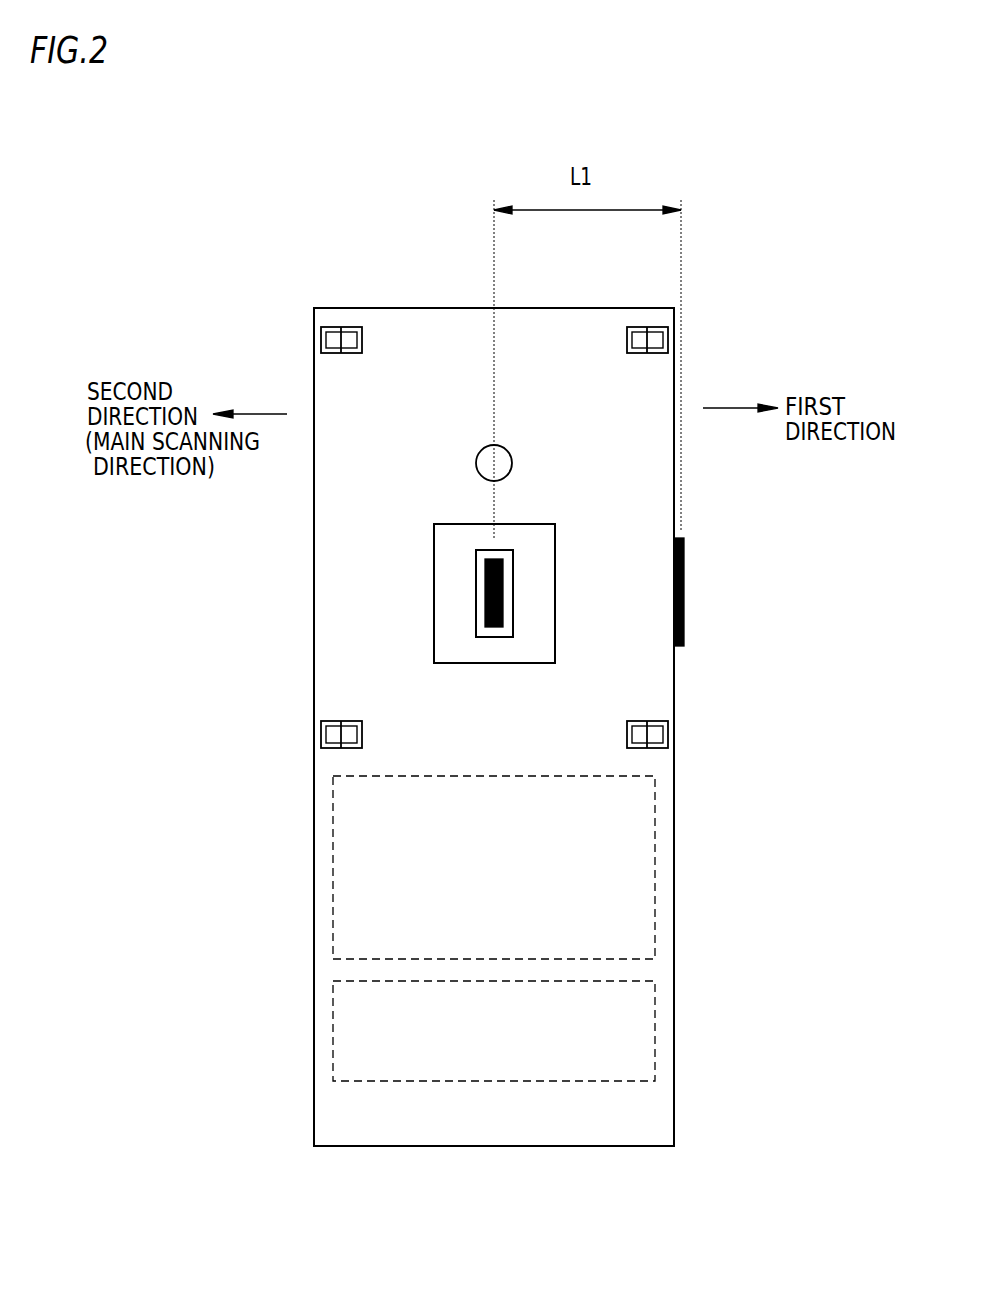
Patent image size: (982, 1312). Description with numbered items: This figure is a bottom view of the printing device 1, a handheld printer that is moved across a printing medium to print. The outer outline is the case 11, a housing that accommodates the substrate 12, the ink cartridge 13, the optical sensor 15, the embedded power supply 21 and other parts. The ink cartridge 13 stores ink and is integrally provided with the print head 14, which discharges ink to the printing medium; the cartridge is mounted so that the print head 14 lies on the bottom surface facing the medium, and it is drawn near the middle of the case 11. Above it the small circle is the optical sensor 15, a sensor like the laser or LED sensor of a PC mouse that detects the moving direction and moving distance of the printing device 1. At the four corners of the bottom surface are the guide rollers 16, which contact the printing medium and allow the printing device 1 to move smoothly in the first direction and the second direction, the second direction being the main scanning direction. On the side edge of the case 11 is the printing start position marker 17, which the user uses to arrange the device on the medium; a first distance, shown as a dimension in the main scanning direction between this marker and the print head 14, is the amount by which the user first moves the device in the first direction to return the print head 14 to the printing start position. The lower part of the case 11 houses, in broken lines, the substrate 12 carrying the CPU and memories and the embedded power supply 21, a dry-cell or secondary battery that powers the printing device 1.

The printing device 1 is at (745, 238).
The case 11 is at (677, 380).
The substrate 12 is at (657, 852).
The ink cartridge 13 is at (434, 551).
The print head 14 is at (475, 600).
The optical sensor 15 is at (503, 447).
The guide rollers 16 is at (321, 339).
The printing start position marker 17 is at (684, 583).
The embedded power supply 21 is at (657, 1013).